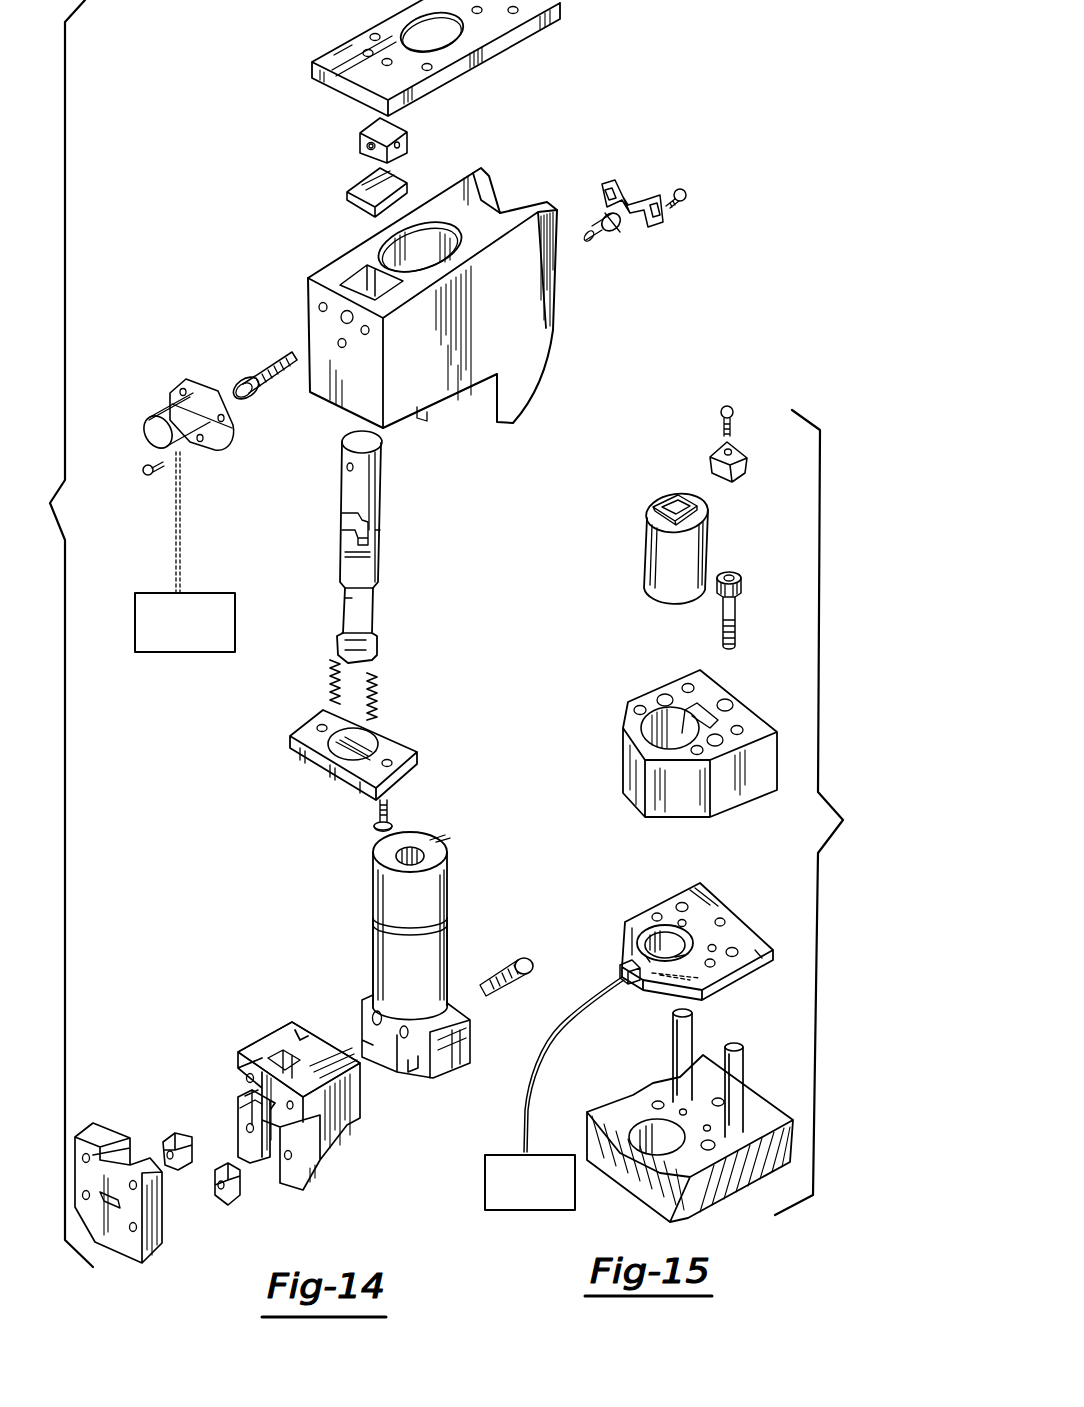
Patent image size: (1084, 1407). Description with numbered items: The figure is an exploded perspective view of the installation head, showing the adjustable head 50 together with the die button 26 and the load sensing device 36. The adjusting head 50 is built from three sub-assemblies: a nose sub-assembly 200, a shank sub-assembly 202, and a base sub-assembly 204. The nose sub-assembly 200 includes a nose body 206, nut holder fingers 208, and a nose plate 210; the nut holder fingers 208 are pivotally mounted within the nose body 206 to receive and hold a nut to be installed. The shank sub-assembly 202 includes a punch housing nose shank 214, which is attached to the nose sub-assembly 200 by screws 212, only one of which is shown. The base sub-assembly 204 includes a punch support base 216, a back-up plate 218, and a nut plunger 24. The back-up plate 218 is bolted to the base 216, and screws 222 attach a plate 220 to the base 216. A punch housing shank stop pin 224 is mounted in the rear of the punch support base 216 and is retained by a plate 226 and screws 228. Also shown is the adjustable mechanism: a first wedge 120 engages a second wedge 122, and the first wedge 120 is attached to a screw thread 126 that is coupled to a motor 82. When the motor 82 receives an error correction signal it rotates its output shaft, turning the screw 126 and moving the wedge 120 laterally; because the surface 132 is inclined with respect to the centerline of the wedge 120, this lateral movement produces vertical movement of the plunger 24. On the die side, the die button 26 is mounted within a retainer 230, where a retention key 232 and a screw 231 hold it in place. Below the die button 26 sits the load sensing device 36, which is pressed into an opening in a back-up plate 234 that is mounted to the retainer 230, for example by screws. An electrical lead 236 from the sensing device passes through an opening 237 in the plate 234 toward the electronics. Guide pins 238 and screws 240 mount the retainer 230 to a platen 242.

In FIG. 14, the adjustable head 50 is at (52, 508).
In FIG. 14, the back-up plate 218 is at (530, 28).
In FIG. 14, the first wedge 120 is at (358, 140).
In FIG. 14, the surface 132 is at (392, 163).
In FIG. 14, the second wedge 122 is at (345, 195).
In FIG. 14, the punch support base 216 is at (520, 367).
In FIG. 14, the base sub-assembly 204 is at (465, 441).
In FIG. 14, the punch housing shank stop pin 224 is at (606, 240).
In FIG. 14, the plate 226 is at (655, 225).
In FIG. 14, the screws 228 is at (688, 196).
In FIG. 14, the screw thread 126 is at (280, 352).
In FIG. 14, the motor 82 is at (170, 402).
In FIG. 14, the nut plunger 24 is at (368, 568).
In FIG. 14, the plate 220 is at (292, 753).
In FIG. 14, the screws 222 is at (392, 818).
In FIG. 14, the punch housing nose shank 214 is at (372, 880).
In FIG. 14, the shank sub-assembly 202 is at (350, 946).
In FIG. 14, the screws 212 is at (522, 958).
In FIG. 14, the nose sub-assembly 200 is at (222, 1052).
In FIG. 14, the nose body 206 is at (352, 1120).
In FIG. 14, the nut holder fingers 208 is at (172, 1134).
In FIG. 14, the nose plate 210 is at (153, 1228).
In FIG. 15, the screw 231 is at (720, 414).
In FIG. 15, the retention key 232 is at (708, 458).
In FIG. 15, the die button 26 is at (645, 550).
In FIG. 15, the screws 240 is at (736, 611).
In FIG. 15, the retainer 230 is at (628, 770).
In FIG. 15, the load sensing device 36 is at (643, 935).
In FIG. 15, the back-up plate 234 is at (740, 938).
In FIG. 15, the opening 237 is at (628, 972).
In FIG. 15, the electrical lead 236 is at (520, 1100).
In FIG. 15, the guide pins 238 is at (673, 1050).
In FIG. 15, the platen 242 is at (715, 1200).